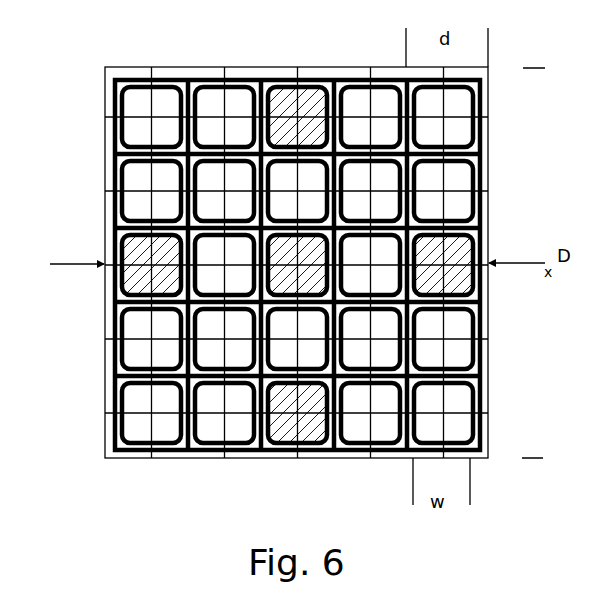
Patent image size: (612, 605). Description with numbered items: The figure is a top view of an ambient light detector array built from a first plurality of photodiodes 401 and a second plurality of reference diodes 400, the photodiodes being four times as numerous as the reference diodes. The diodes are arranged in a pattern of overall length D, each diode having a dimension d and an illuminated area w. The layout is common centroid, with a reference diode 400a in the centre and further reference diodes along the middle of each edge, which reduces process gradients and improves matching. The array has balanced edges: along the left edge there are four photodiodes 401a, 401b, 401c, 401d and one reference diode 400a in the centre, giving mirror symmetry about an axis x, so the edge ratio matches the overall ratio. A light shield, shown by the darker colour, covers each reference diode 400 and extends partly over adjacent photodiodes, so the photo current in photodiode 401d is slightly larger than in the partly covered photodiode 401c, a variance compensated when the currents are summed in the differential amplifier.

The reference diode 400 is at (287, 428).
The reference diode 400a is at (140, 251).
The photodiode 401 is at (217, 428).
The photodiode 401a is at (140, 125).
The photodiode 401b is at (140, 178).
The photodiode 401c is at (140, 348).
The photodiode 401d is at (140, 428).